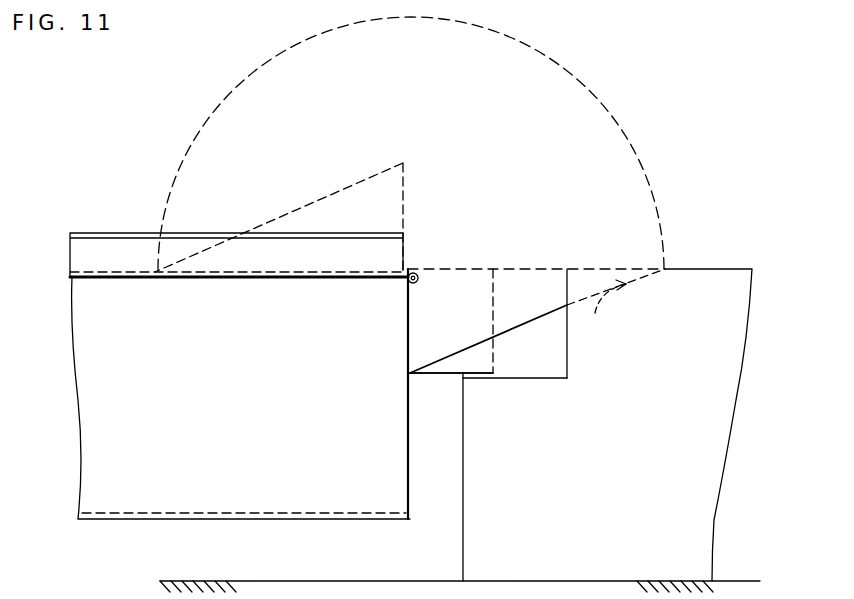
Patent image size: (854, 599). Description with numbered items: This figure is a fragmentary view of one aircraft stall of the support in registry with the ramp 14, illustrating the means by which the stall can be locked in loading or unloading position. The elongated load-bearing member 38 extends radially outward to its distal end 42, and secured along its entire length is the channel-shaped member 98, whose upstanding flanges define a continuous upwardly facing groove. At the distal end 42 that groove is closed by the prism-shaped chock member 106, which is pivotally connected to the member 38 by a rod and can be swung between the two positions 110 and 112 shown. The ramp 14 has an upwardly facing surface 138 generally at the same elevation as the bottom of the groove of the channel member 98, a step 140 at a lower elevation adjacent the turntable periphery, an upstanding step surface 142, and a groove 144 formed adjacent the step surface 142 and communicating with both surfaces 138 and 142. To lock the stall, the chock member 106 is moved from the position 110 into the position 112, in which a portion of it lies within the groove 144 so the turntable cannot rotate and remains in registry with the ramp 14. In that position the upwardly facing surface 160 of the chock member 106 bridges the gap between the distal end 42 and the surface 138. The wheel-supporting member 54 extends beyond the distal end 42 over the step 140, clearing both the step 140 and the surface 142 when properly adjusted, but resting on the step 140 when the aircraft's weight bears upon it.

The ramp 14 is at (700, 448).
The load-bearing member 38 is at (90, 352).
The distal end 42 is at (410, 420).
The wheel-supporting member 54 is at (442, 378).
The channel-shaped member 98 is at (150, 233).
The chock member 106 is at (410, 302).
The first position of chock 110 is at (398, 164).
The second position of chock 112 is at (514, 312).
The upwardly facing surface 138 is at (578, 268).
The step 140 is at (476, 372).
The upstanding step surface 142 is at (566, 305).
The groove 144 is at (616, 305).
The upwardly facing surface of chock 160 is at (424, 269).